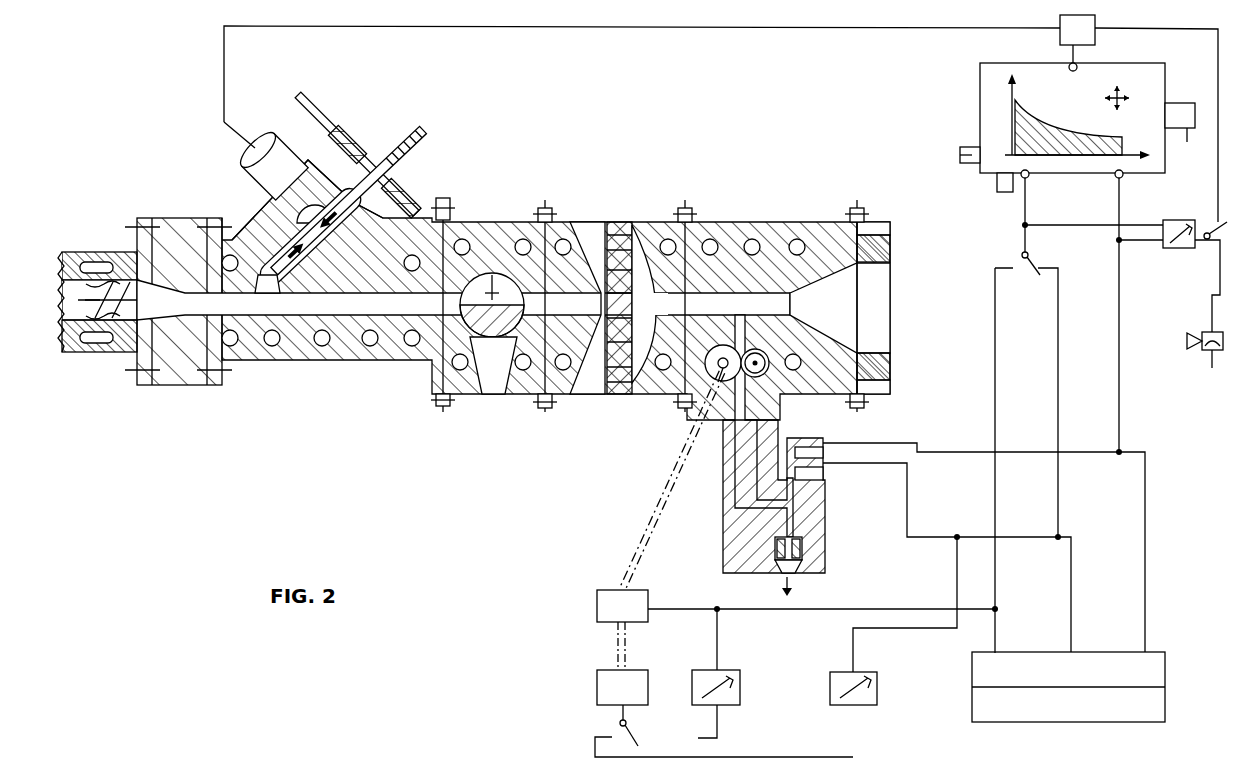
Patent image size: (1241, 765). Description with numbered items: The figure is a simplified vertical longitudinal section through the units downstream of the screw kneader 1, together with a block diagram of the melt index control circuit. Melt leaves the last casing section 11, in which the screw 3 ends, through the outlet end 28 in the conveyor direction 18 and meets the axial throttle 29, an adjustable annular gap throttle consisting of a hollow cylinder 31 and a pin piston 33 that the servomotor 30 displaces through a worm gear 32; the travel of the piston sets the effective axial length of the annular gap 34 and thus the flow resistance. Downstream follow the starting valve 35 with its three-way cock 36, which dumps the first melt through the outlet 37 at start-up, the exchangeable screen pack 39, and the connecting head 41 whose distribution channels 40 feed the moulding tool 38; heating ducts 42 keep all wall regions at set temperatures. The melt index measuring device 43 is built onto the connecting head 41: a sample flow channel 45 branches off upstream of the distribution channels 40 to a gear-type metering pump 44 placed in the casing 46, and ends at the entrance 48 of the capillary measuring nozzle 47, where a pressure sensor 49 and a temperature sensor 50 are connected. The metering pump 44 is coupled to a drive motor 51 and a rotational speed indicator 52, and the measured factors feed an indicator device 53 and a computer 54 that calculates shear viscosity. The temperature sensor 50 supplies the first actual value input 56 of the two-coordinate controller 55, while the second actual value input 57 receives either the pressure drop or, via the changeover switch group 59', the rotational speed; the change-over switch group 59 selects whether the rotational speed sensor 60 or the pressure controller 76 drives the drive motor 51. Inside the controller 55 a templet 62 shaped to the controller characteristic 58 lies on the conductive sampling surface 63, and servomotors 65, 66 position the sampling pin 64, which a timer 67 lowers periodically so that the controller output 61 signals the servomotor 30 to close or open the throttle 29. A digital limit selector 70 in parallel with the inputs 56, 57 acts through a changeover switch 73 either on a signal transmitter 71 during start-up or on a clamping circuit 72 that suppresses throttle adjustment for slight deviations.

The screw kneader 1 is at (76, 242).
The screw 3 is at (92, 292).
The last casing section 11 is at (112, 345).
The conveyor direction 18 is at (128, 283).
The outlet end 28 is at (170, 245).
The axial throttle 29 is at (320, 343).
The servomotor 30 is at (255, 163).
The hollow cylinder 31 is at (252, 232).
The worm gear 32 is at (380, 158).
The pin piston 33 is at (262, 292).
The annular gap 34 is at (295, 300).
The starting valve 35 is at (512, 240).
The three-way cock 36 is at (491, 297).
The outlet 37 is at (494, 380).
The moulding tool 38 is at (892, 300).
The screen pack 39 is at (616, 235).
The distribution channels 40 is at (828, 258).
The connecting head 41 is at (716, 240).
The heating ducts 42 is at (88, 340).
The melt index measuring device 43 is at (712, 479).
The metering pump 44 is at (772, 360).
The sample flow channel 45 is at (739, 328).
The casing 46 is at (767, 287).
The capillary measuring nozzle 47 is at (803, 548).
The entrance 48 is at (796, 531).
The pressure sensor 49 is at (822, 474).
The temperature sensor 50 is at (822, 443).
The drive motor 51 is at (597, 687).
The rotational speed indicator 52 is at (597, 607).
The indicator device 53 is at (1167, 668).
The computer 54 is at (1167, 708).
The two-coordinate controller 55 is at (982, 76).
The first actual value input 56 is at (1123, 178).
The second actual value input 57 is at (1029, 178).
The controller characteristic 58 is at (1104, 136).
The change-over switch group 59 is at (698, 731).
The changeover switch group 59' is at (1053, 388).
The rotational speed sensor 60 is at (741, 691).
The controller output 61 is at (1070, 64).
The templet 62 is at (1074, 145).
The sampling surface 63 is at (1070, 100).
The sampling pin 64 is at (1125, 95).
The servomotor 65 is at (997, 183).
The servomotor 66 is at (960, 155).
The timer 67 is at (1184, 133).
The digital limit selector 70 is at (1181, 248).
The signal transmitter 71 is at (1205, 360).
The clamping circuit 72 is at (1096, 42).
The changeover switch 73 is at (1214, 226).
The pressure controller 76 is at (877, 693).